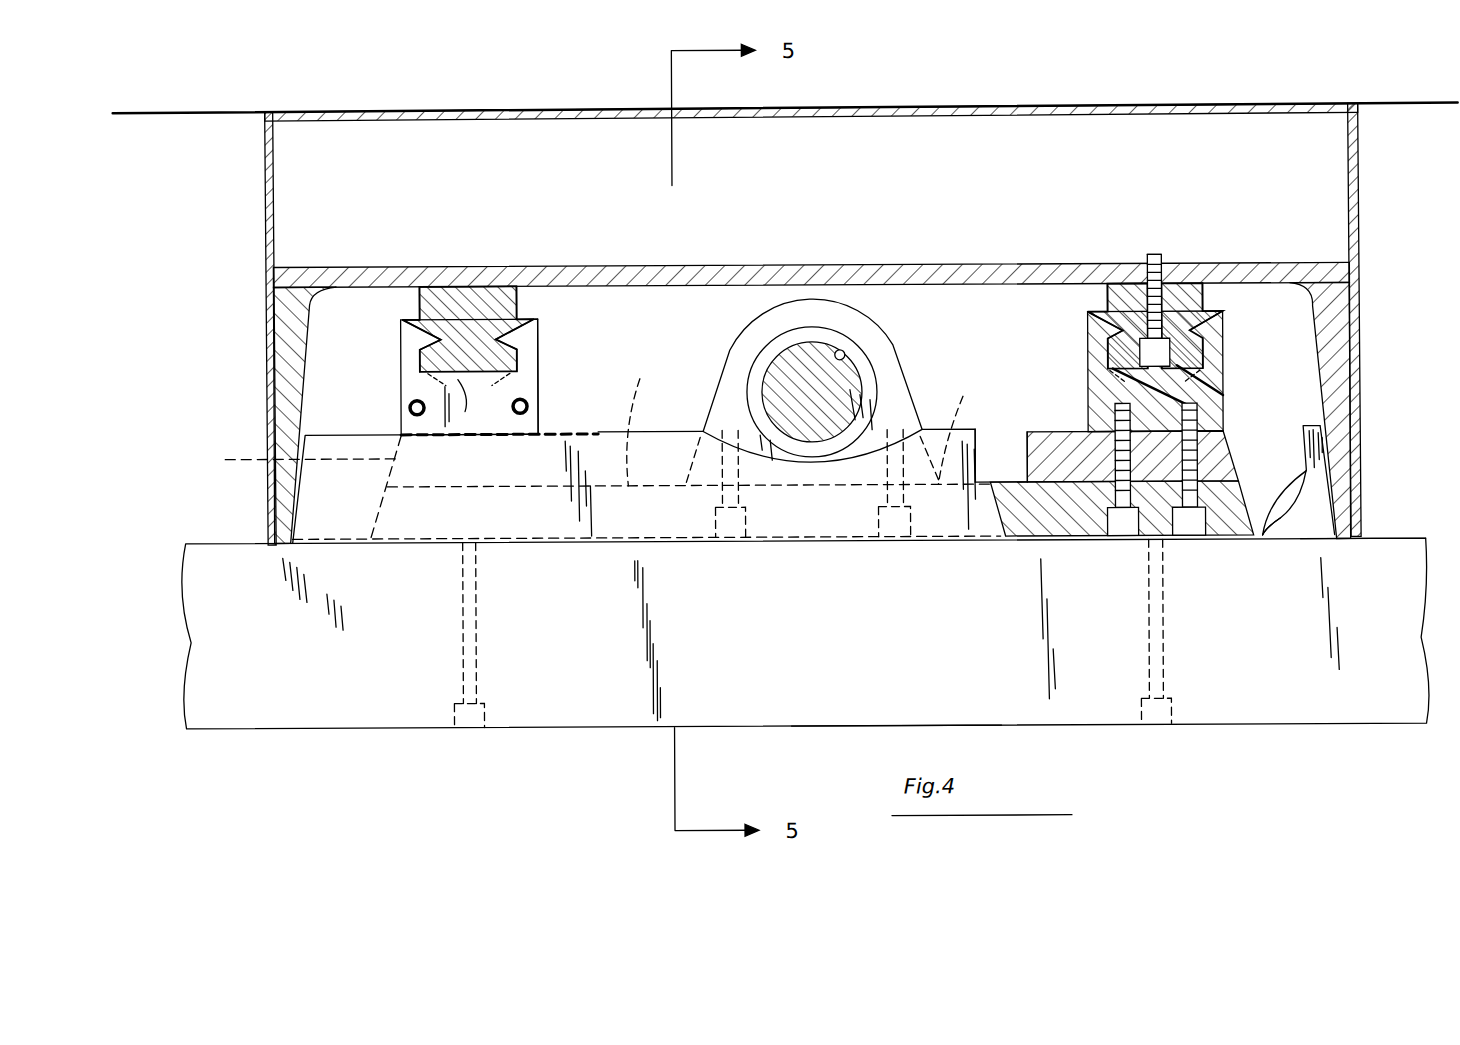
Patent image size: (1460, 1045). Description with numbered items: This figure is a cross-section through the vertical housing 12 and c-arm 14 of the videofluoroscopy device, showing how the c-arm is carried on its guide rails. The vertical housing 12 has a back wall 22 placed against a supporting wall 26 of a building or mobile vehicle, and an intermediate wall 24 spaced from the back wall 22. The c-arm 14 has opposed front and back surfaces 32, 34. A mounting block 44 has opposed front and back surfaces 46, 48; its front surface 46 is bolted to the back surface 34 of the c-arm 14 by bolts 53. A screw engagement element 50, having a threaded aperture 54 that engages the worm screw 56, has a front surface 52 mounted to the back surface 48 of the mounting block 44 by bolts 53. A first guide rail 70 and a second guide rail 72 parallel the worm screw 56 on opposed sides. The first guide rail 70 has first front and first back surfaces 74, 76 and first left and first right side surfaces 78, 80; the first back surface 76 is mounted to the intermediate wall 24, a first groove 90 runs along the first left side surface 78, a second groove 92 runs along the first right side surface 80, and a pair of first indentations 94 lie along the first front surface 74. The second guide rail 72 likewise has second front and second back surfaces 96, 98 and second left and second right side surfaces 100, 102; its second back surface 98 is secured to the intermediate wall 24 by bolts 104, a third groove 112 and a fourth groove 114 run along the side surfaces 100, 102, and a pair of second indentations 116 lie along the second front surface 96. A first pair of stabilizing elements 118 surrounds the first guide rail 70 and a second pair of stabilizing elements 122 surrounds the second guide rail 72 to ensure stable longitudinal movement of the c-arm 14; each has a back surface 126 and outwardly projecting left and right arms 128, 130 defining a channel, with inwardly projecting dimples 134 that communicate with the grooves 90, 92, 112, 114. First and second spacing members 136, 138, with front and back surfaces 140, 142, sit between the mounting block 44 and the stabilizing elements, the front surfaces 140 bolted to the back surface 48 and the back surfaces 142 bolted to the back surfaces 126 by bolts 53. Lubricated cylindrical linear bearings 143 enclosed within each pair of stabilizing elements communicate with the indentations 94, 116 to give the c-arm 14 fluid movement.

The vertical housing 12 is at (267, 345).
The c-arm 14 is at (896, 657).
The back wall 22 is at (560, 117).
The intermediate wall 24 is at (648, 268).
The supporting wall 26 is at (195, 111).
The front surface 32 is at (787, 728).
The back surface 34 is at (1385, 541).
The mounting block 44 is at (1245, 498).
The front surface 46 is at (1270, 532).
The back surface 48 is at (640, 436).
The screw engagement element 50 is at (892, 365).
The front surface 52 is at (1002, 425).
The bolts 53 is at (478, 630).
The threaded aperture 54 is at (843, 352).
The worm screw 56 is at (785, 372).
The first guide rail 70 is at (485, 295).
The second guide rail 72 is at (1168, 268).
The first front surface 74 is at (470, 377).
The first back surface 76 is at (500, 283).
The first left side surface 78 is at (395, 290).
The first right side surface 80 is at (530, 300).
The first groove 90 is at (455, 300).
The second groove 92 is at (512, 341).
The first indentations 94 is at (440, 358).
The second front surface 96 is at (1225, 420).
The second back surface 98 is at (1127, 286).
The second left side surface 100 is at (1106, 292).
The second right side surface 102 is at (1205, 296).
The bolts 104 is at (1150, 260).
The third groove 112 is at (1114, 305).
The fourth groove 114 is at (1218, 312).
The second indentations 116 is at (1124, 372).
The first pair of stabilizing elements 118 is at (538, 426).
The second pair of stabilizing elements 122 is at (1100, 432).
The back surface 126 is at (403, 428).
The left arm 128 is at (438, 338).
The right arm 130 is at (540, 326).
The dimples 134 is at (417, 325).
The first spacing member 136 is at (287, 461).
The second spacing member 138 is at (1035, 440).
The front surface 140 is at (440, 485).
The back surface 142 is at (1000, 398).
The linear bearings 143 is at (420, 378).